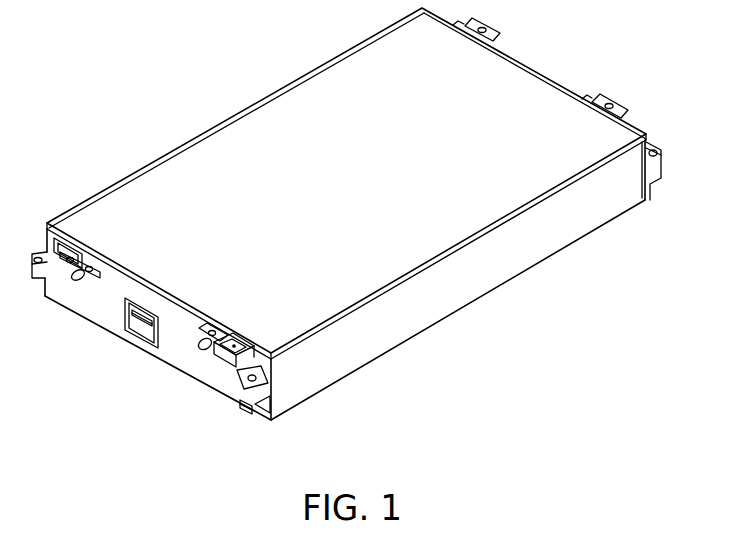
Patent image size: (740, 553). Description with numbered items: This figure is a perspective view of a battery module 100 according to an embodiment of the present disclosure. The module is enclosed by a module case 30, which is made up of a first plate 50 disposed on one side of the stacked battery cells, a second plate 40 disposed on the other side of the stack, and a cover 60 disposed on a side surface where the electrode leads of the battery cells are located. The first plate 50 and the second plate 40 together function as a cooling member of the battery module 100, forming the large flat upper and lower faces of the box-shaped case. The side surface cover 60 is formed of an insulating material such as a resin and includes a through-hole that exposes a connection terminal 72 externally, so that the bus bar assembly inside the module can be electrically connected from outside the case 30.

The battery module 100 is at (180, 35).
The module case 30 is at (650, 333).
The second plate 40 is at (473, 215).
The first plate 50 is at (555, 233).
The cover 60 is at (656, 181).
The connection terminal 72 is at (213, 352).